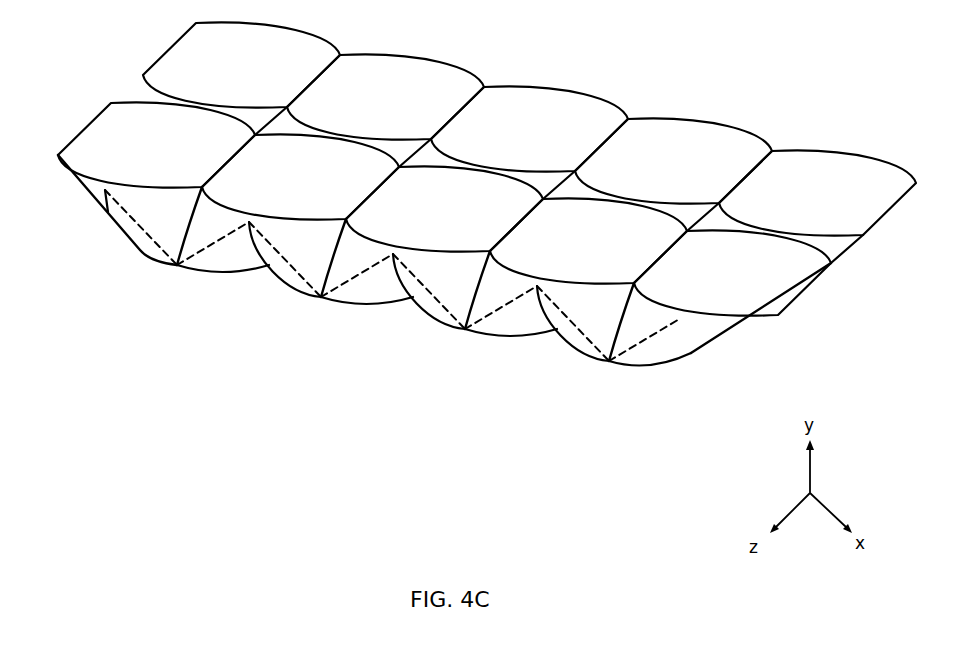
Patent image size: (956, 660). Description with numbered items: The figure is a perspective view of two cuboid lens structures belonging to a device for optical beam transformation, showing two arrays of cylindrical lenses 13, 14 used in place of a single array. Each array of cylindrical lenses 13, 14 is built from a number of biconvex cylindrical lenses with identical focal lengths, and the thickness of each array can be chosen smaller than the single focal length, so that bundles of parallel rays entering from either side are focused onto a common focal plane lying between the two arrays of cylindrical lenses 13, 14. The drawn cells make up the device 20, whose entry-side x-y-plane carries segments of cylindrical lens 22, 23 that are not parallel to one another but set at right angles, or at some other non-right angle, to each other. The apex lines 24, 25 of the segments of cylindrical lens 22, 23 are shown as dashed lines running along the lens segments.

The array of cylindrical lenses 13 is at (124, 249).
The array of cylindrical lenses 14 is at (693, 110).
The device for optical beam transformation 20 is at (460, 239).
The segment of cylindrical lens 22 is at (108, 218).
The segment of cylindrical lens 23 is at (201, 217).
The apex line 24 is at (144, 252).
The apex line 25 is at (210, 262).